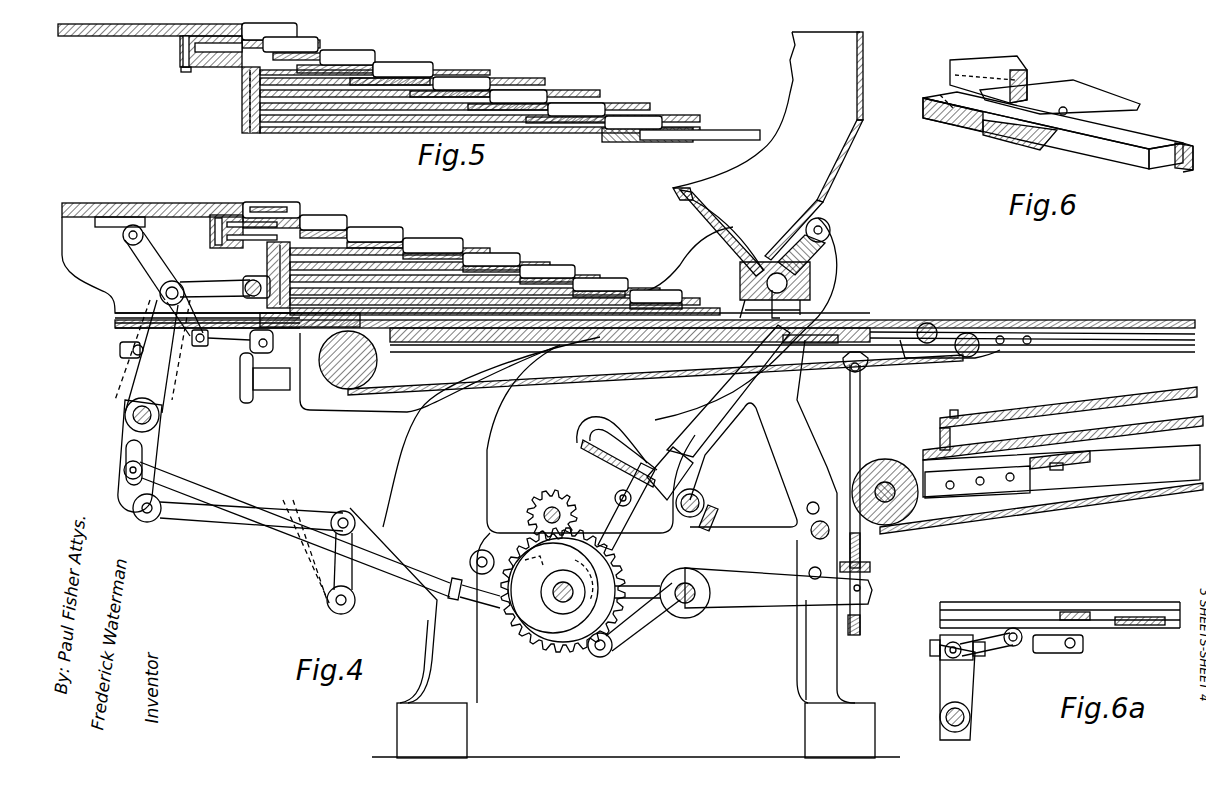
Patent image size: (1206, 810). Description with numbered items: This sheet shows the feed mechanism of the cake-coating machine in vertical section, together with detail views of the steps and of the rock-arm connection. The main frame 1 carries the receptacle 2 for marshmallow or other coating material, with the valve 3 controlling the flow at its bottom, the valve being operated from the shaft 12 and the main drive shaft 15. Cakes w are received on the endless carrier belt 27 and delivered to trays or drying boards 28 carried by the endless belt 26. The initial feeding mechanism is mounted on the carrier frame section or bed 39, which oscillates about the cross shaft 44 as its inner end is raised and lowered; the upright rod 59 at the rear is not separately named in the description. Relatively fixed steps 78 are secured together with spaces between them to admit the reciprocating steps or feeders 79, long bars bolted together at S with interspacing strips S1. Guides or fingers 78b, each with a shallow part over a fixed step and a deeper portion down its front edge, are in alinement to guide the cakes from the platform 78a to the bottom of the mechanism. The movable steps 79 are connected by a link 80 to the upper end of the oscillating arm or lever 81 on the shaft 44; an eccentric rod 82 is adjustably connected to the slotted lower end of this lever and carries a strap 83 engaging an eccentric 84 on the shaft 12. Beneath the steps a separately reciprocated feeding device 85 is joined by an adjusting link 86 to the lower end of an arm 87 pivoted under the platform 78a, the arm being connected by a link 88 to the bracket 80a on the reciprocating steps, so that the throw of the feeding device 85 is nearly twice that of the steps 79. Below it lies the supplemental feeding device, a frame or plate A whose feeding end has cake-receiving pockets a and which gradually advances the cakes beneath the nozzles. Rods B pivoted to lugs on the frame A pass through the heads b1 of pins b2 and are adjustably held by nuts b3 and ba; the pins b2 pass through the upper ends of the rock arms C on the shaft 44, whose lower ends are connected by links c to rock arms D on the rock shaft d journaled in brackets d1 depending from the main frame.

In FIG. 4, the main frame 1 is at (460, 666).
In FIG. 4, the receptacle 2 is at (830, 186).
In FIG. 4, the valve 3 is at (748, 275).
In FIG. 4, the cake-receiving pockets a is at (790, 300).
In FIG. 4, the shaft 12 is at (563, 603).
In FIG. 4, the main drive shaft 15 is at (552, 500).
In FIG. 4, the endless belt 26 is at (893, 458).
In FIG. 4, the endless carrier belt 27 is at (1080, 326).
In FIG. 4, the trays or drying boards 28 is at (1018, 412).
In FIG. 4, the carrier frame section or bed 39 is at (115, 296).
In FIG. 6A, the cross shaft 44 is at (970, 717).
In FIG. 4, the cross shaft 44 is at (124, 416).
In FIG. 4, the adjusting post 59 is at (862, 400).
In FIG. 5, the fixed steps 78 is at (380, 62).
In FIG. 6, the fixed steps 78 is at (1112, 103).
In FIG. 4, the fixed steps 78 is at (305, 220).
In FIG. 4, the platform 78a is at (128, 203).
In FIG. 5, the guides or fingers 78b is at (318, 46).
In FIG. 6, the guides or fingers 78b is at (995, 64).
In FIG. 5, the movable steps or feeders 79 is at (432, 70).
In FIG. 6, the movable steps or feeders 79 is at (1068, 80).
In FIG. 4, the movable steps or feeders 79 is at (262, 206).
In FIG. 4, the link 80 is at (236, 282).
In FIG. 4, the bracket 80a is at (268, 278).
In FIG. 4, the oscillating arm or lever 81 is at (138, 372).
In FIG. 4, the eccentric rod 82 is at (300, 528).
In FIG. 4, the strap 83 is at (515, 550).
In FIG. 4, the eccentric 84 is at (527, 608).
In FIG. 4, the feeding device 85 is at (262, 318).
In FIG. 6A, the adjusting link 86 is at (1050, 652).
In FIG. 4, the adjusting link 86 is at (228, 342).
In FIG. 4, the arm 87 is at (140, 260).
In FIG. 4, the link 88 is at (210, 282).
In FIG. 4, the frame or plate A is at (562, 343).
In FIG. 6A, the rods B is at (1008, 646).
In FIG. 6A, the rock arms C is at (970, 694).
In FIG. 4, the rock arms C is at (125, 398).
In FIG. 4, the rock arms D is at (320, 582).
In FIG. 5, the bolts S is at (184, 72).
In FIG. 5, the interspacing strips S1 is at (242, 95).
In FIG. 6A, the heads b1 is at (950, 660).
In FIG. 6A, the pins b2 is at (943, 655).
In FIG. 4, the pins b2 is at (120, 350).
In FIG. 6A, the nut b3 is at (935, 645).
In FIG. 6A, the nut ba is at (958, 640).
In FIG. 4, the links c is at (212, 520).
In FIG. 4, the rock shaft d is at (334, 614).
In FIG. 4, the brackets d1 is at (360, 580).
In FIG. 4, the cakes w is at (578, 270).